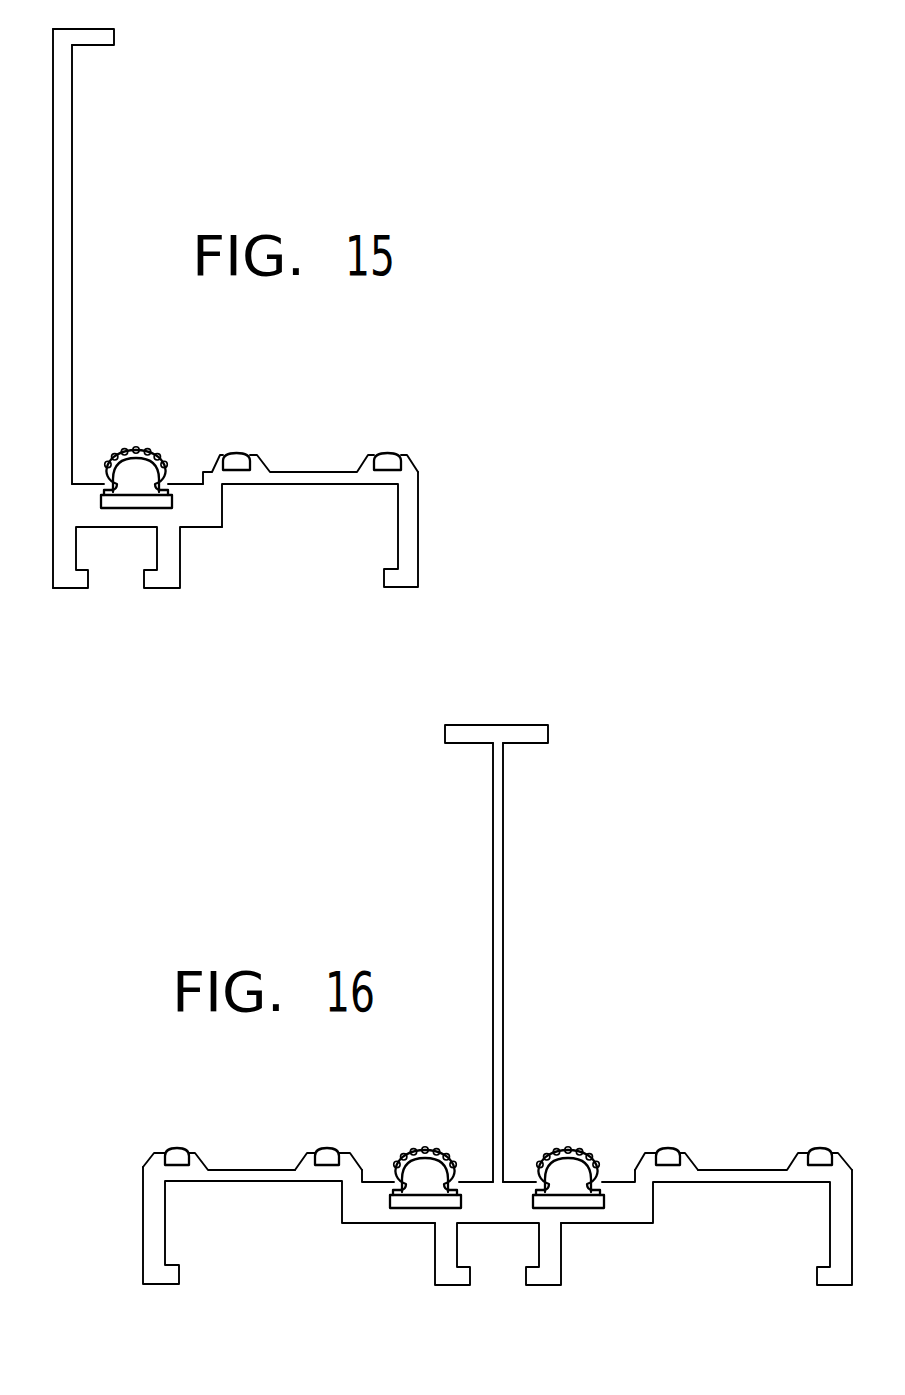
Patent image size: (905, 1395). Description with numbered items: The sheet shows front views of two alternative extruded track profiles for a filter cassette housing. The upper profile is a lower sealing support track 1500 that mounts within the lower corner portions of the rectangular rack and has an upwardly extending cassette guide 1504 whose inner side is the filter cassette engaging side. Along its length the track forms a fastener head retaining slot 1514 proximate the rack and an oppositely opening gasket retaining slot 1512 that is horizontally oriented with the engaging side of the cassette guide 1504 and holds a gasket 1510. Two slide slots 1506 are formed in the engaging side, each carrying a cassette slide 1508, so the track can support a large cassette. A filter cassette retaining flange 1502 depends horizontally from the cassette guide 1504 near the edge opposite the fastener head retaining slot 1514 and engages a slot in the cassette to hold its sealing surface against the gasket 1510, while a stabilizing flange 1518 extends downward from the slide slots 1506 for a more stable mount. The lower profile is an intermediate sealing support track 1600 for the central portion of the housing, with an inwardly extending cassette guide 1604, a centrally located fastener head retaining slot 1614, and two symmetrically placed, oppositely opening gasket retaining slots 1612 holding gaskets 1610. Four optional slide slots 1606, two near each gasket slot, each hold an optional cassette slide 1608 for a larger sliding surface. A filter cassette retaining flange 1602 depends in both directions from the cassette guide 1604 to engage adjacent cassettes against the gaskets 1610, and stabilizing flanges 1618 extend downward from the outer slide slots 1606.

In FIG. 15, the lower sealing support track 1500 is at (393, 104).
In FIG. 15, the filter cassette retaining flange 1502 is at (108, 36).
In FIG. 15, the cassette guide 1504 is at (64, 85).
In FIG. 15, the slide slot 1506 is at (372, 467).
In FIG. 15, the cassette slide 1508 is at (236, 452).
In FIG. 15, the gasket 1510 is at (135, 445).
In FIG. 15, the gasket retaining slot 1512 is at (173, 501).
In FIG. 15, the fastener head retaining slot 1514 is at (108, 562).
In FIG. 15, the stabilizing flange 1518 is at (393, 578).
In FIG. 16, the intermediate sealing support track 1600 is at (716, 795).
In FIG. 16, the filter cassette retaining flange 1602 is at (497, 735).
In FIG. 16, the cassette guide 1604 is at (498, 874).
In FIG. 16, the slide slot 1606 is at (160, 1155).
In FIG. 16, the cassette slide 1608 is at (325, 1150).
In FIG. 16, the gasket 1610 is at (427, 1145).
In FIG. 16, the gasket retaining slot 1612 is at (417, 1207).
In FIG. 16, the fastener head retaining slot 1614 is at (494, 1254).
In FIG. 16, the stabilizing flange 1618 is at (148, 1275).